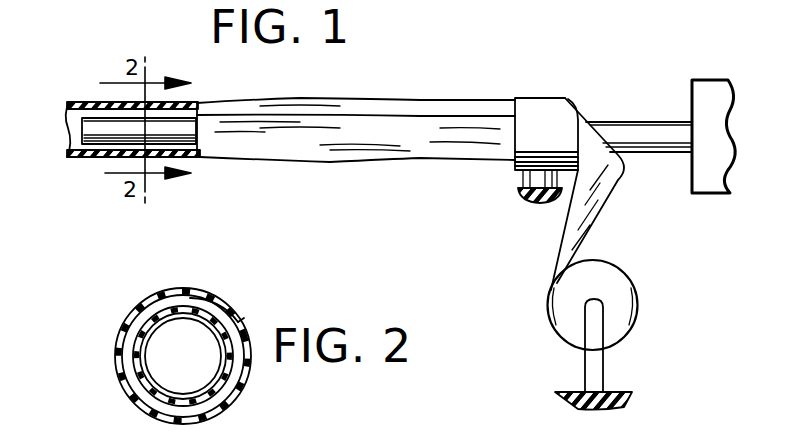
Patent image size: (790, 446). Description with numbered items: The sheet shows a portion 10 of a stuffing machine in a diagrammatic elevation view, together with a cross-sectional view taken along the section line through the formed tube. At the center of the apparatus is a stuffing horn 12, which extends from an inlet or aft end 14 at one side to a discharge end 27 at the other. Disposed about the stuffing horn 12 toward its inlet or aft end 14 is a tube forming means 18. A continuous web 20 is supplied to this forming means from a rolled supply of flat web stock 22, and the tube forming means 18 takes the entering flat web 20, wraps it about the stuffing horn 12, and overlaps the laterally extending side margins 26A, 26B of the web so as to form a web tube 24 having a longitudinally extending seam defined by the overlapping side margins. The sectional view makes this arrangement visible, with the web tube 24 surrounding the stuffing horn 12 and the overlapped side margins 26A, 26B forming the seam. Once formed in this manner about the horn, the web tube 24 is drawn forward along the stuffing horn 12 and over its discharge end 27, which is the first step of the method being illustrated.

In FIG. 1, the portion of a stuffing machine 10 is at (692, 66).
In FIG. 1, the stuffing horn 12 is at (184, 131).
In FIG. 2, the stuffing horn 12 is at (224, 378).
In FIG. 1, the inlet or aft end 14 is at (655, 140).
In FIG. 1, the tube forming means 18 is at (548, 115).
In FIG. 1, the continuous web 20 is at (592, 199).
In FIG. 1, the rolled supply of flat web stock 22 is at (632, 290).
In FIG. 1, the web tube 24 is at (416, 160).
In FIG. 2, the web tube 24 is at (116, 357).
In FIG. 2, the laterally extending side margin 26A is at (178, 294).
In FIG. 1, the laterally extending side margin 26B is at (397, 112).
In FIG. 2, the laterally extending side margin 26B is at (234, 313).
In FIG. 1, the discharge end 27 is at (82, 129).